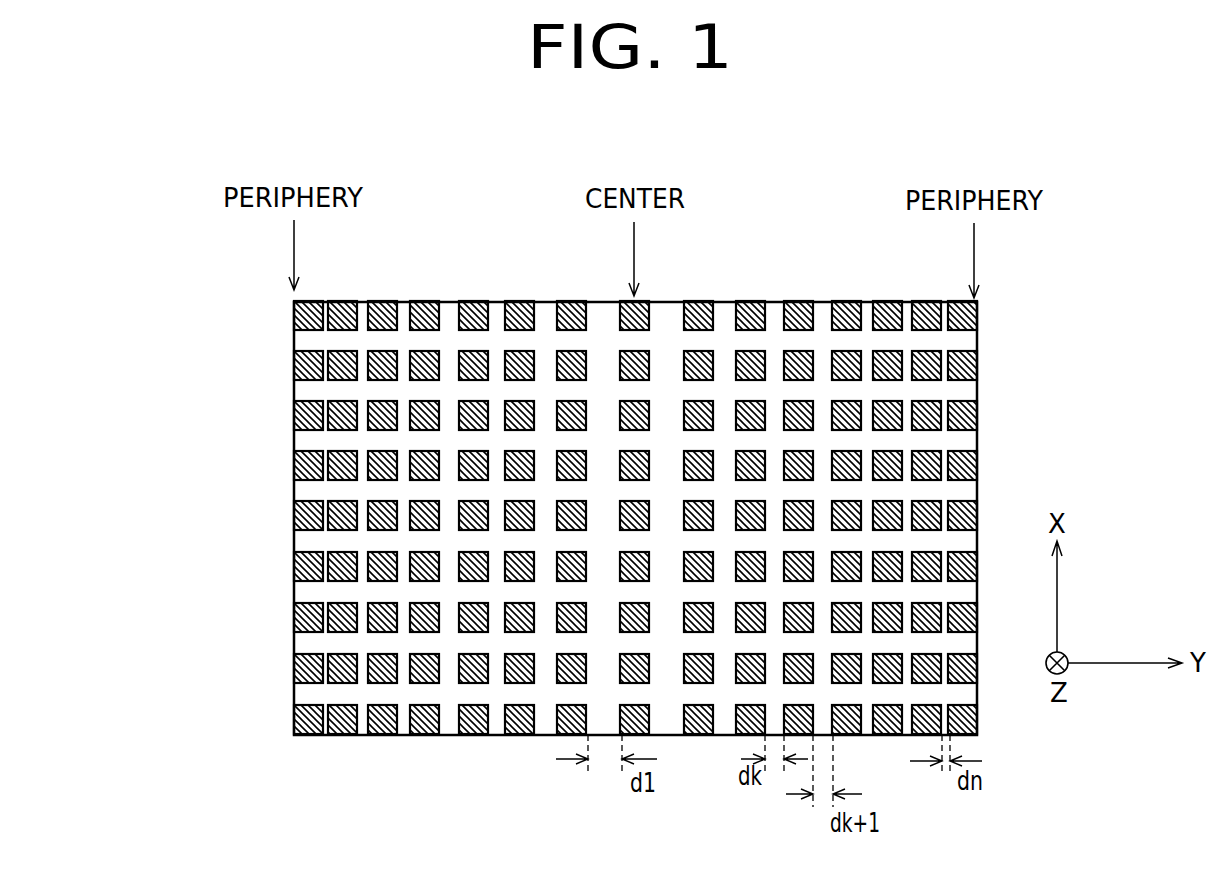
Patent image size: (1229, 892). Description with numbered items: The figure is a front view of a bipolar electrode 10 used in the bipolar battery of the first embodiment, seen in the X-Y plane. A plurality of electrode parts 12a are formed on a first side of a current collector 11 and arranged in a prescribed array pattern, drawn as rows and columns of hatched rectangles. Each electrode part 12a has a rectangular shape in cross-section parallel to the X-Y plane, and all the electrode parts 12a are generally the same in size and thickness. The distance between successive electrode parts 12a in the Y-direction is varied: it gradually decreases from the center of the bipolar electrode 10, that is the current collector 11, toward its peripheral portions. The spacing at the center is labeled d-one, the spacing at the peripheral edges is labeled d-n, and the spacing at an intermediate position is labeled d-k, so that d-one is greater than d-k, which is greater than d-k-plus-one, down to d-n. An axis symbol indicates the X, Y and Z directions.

The bipolar electrode 10 is at (572, 495).
The current collector 11 is at (674, 718).
The electrode part 12a is at (648, 317).